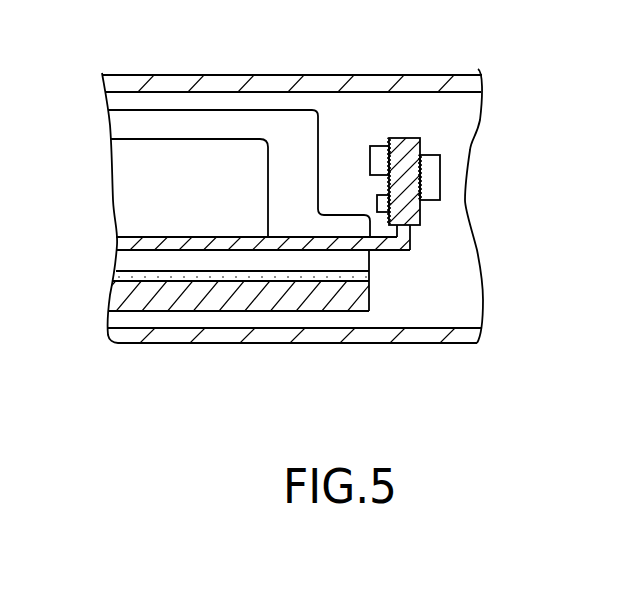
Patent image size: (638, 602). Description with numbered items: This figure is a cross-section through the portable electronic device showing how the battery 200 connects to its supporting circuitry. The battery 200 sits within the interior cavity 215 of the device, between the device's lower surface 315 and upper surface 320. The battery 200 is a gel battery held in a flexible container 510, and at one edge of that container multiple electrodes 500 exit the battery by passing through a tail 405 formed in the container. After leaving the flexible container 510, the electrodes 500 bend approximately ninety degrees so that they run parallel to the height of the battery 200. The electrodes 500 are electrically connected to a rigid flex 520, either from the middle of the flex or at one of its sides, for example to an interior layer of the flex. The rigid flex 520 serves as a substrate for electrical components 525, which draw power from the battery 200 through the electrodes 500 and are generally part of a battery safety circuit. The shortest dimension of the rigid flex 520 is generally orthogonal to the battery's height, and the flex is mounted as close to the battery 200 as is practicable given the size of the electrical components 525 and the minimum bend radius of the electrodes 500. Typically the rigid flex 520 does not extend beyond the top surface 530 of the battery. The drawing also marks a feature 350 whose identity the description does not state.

The battery 200 is at (305, 145).
The interior cavity 215 is at (122, 299).
The lower surface 315 is at (203, 76).
The upper surface 320 is at (186, 342).
The interposer layer 350 is at (137, 271).
The tail 405 is at (369, 262).
The electrodes 500 is at (410, 250).
The flexible container 510 is at (321, 111).
The rigid flex 520 is at (410, 138).
The electrical components 525 is at (377, 203).
The top surface 530 is at (150, 108).